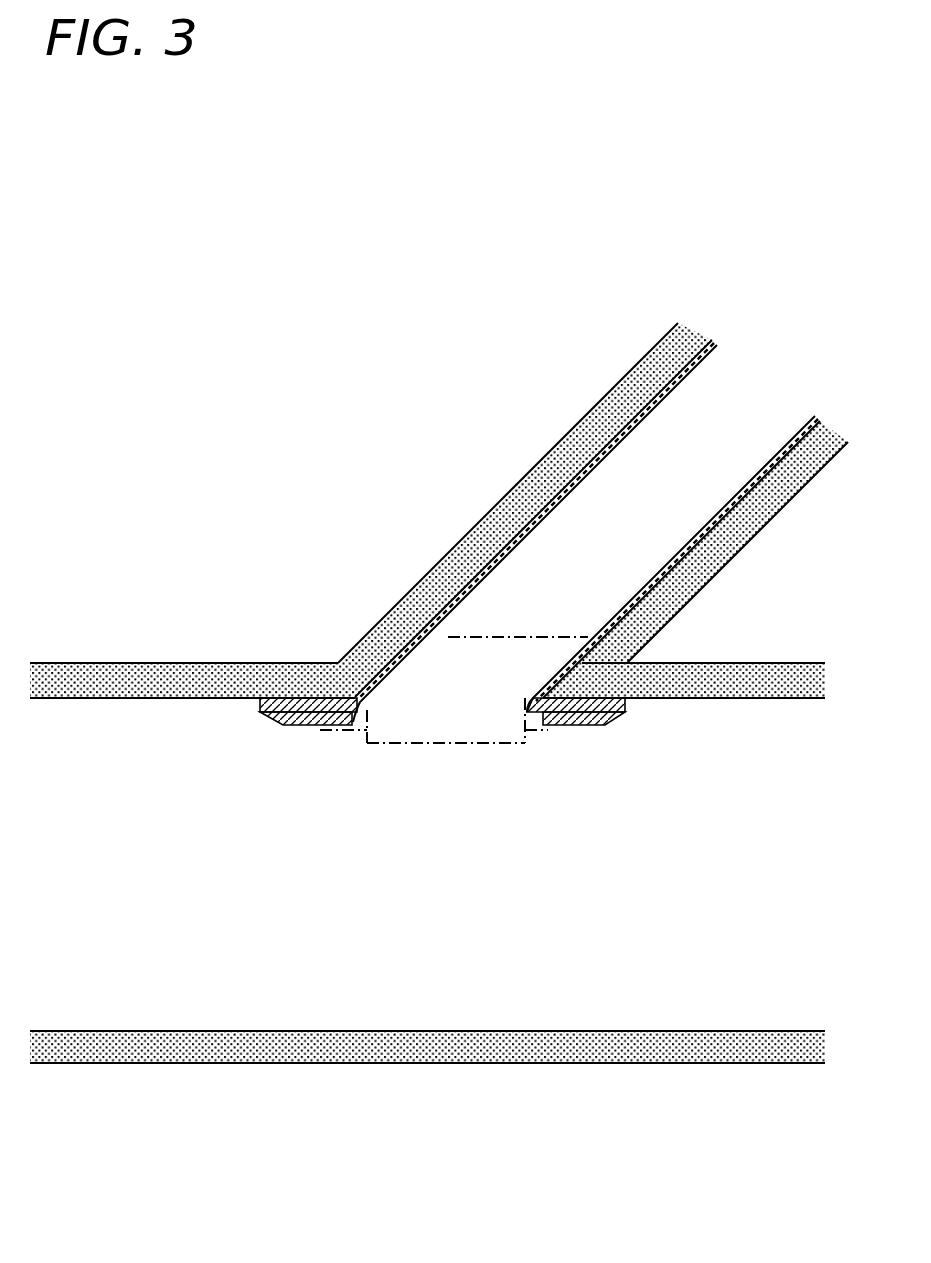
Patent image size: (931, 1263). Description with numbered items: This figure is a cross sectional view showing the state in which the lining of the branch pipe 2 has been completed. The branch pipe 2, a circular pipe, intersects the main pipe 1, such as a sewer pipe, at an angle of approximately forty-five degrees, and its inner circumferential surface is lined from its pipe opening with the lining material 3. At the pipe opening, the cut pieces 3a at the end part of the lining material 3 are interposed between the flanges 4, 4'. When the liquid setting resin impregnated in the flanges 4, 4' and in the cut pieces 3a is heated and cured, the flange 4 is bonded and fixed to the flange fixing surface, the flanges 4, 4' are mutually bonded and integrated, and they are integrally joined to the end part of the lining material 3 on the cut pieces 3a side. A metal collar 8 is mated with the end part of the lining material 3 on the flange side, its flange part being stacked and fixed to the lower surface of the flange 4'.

The main pipe 1 is at (172, 663).
The branch pipe 2 is at (467, 555).
The lining material 3 is at (605, 470).
The cut pieces 3a is at (600, 718).
The flange 4 is at (695, 559).
The flange 4' is at (672, 632).
The collar 8 is at (433, 743).